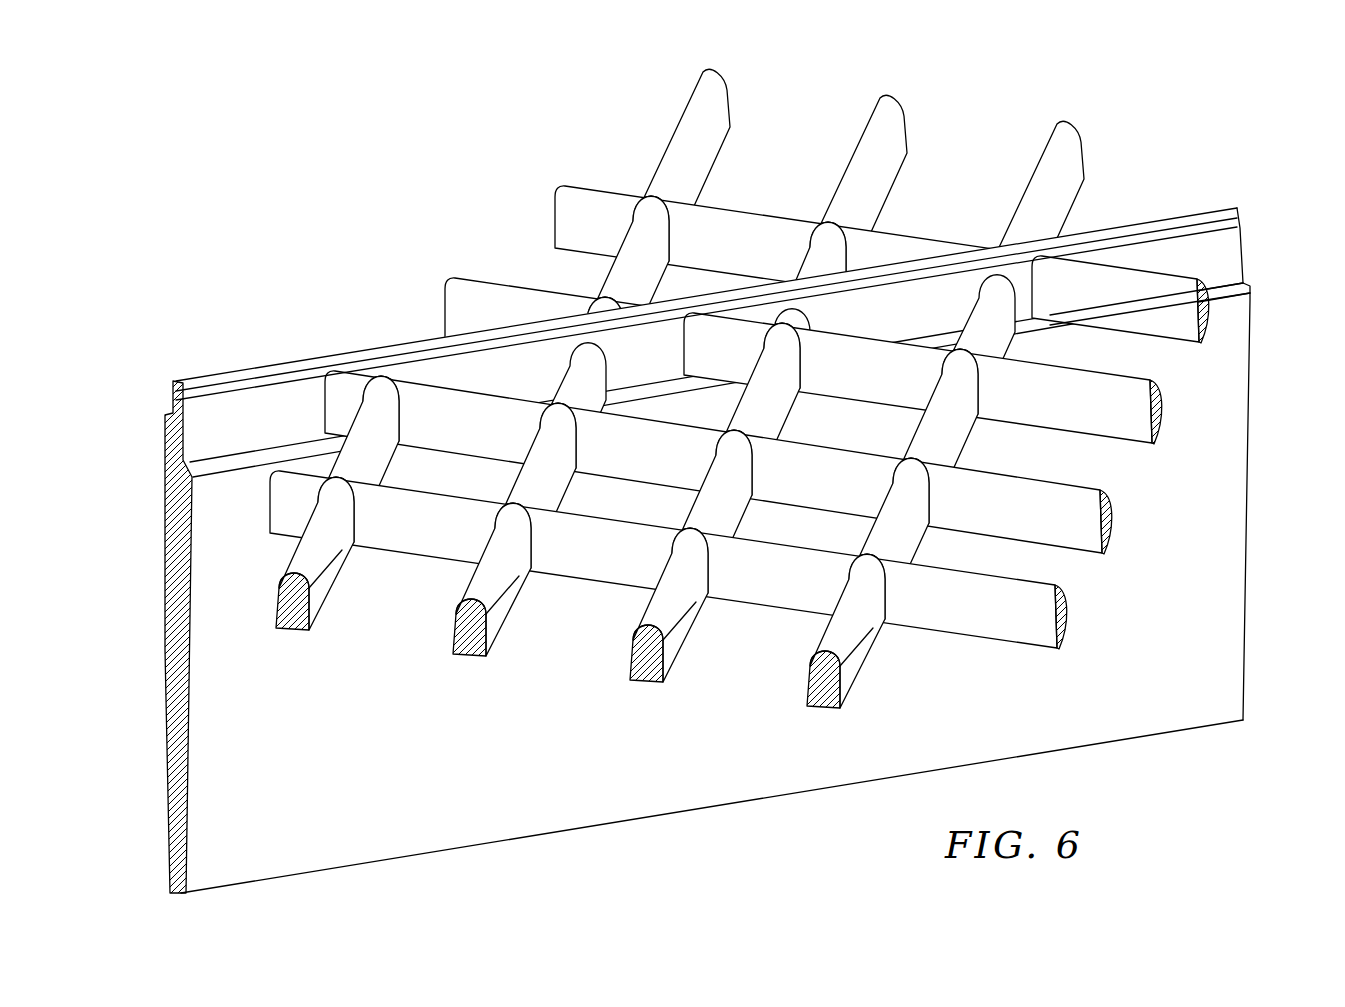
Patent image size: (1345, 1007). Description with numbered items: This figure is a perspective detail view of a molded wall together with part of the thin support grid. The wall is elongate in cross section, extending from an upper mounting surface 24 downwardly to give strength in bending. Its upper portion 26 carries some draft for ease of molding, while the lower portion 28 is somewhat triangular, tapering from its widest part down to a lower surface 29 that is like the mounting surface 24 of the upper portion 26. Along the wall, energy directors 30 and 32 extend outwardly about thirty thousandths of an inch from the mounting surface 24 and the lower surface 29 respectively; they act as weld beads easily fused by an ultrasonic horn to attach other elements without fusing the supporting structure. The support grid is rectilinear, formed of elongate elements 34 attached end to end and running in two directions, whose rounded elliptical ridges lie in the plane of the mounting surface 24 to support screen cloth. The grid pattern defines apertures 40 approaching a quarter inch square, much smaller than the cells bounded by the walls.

The upper mounting surface 24 is at (1265, 293).
The upper portion 26 is at (1230, 252).
The lower portion 28 is at (1232, 394).
The lower surface 29 is at (181, 898).
The energy director 30 is at (1240, 205).
The energy director 32 is at (179, 898).
The elongate elements 34 is at (918, 544).
The apertures 40 is at (817, 537).